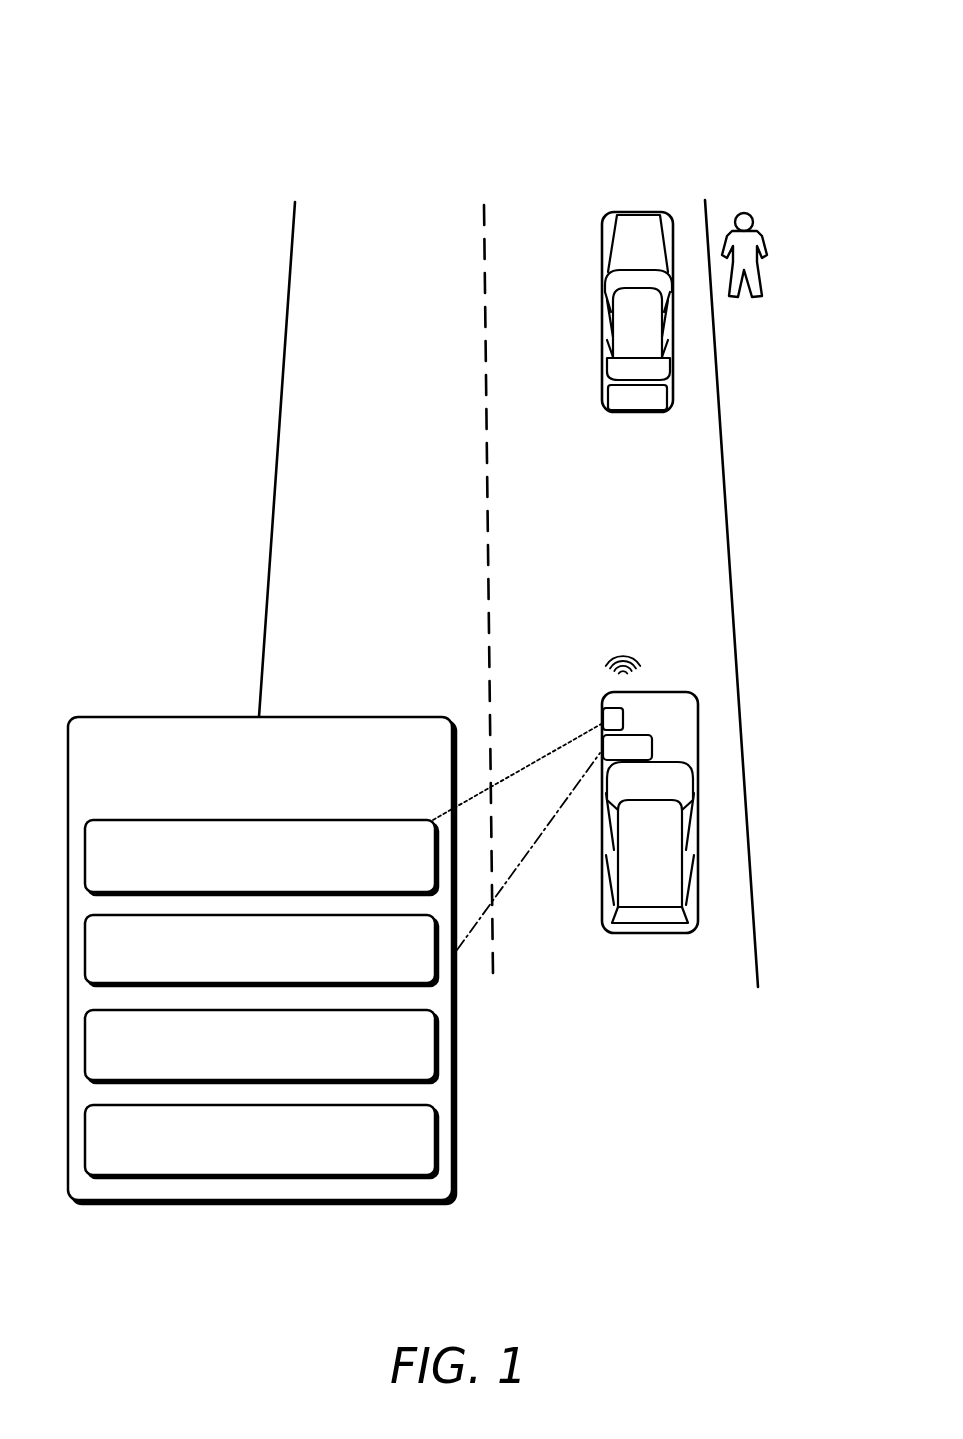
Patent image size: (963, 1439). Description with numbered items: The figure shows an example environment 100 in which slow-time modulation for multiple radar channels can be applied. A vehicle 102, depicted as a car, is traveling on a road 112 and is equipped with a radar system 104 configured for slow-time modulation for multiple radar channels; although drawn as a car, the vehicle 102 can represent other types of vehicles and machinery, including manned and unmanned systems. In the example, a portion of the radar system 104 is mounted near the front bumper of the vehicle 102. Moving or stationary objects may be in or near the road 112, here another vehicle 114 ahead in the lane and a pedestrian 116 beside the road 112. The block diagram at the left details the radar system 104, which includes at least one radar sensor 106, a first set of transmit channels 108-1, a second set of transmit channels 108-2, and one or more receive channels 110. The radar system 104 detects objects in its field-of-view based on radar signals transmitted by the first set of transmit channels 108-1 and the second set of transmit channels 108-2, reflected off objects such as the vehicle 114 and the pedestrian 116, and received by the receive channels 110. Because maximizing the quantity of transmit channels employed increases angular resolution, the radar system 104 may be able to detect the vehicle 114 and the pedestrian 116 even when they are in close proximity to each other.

The environment 100 is at (114, 38).
The vehicle 102 is at (652, 933).
The radar system 104 is at (242, 777).
The radar sensor 106 is at (243, 879).
The first set of transmit channels 108-1 is at (234, 976).
The second set of transmit channels 108-2 is at (234, 1071).
The receive channels 110 is at (243, 1166).
The road 112 is at (290, 561).
The vehicle 114 is at (637, 412).
The pedestrian 116 is at (746, 212).